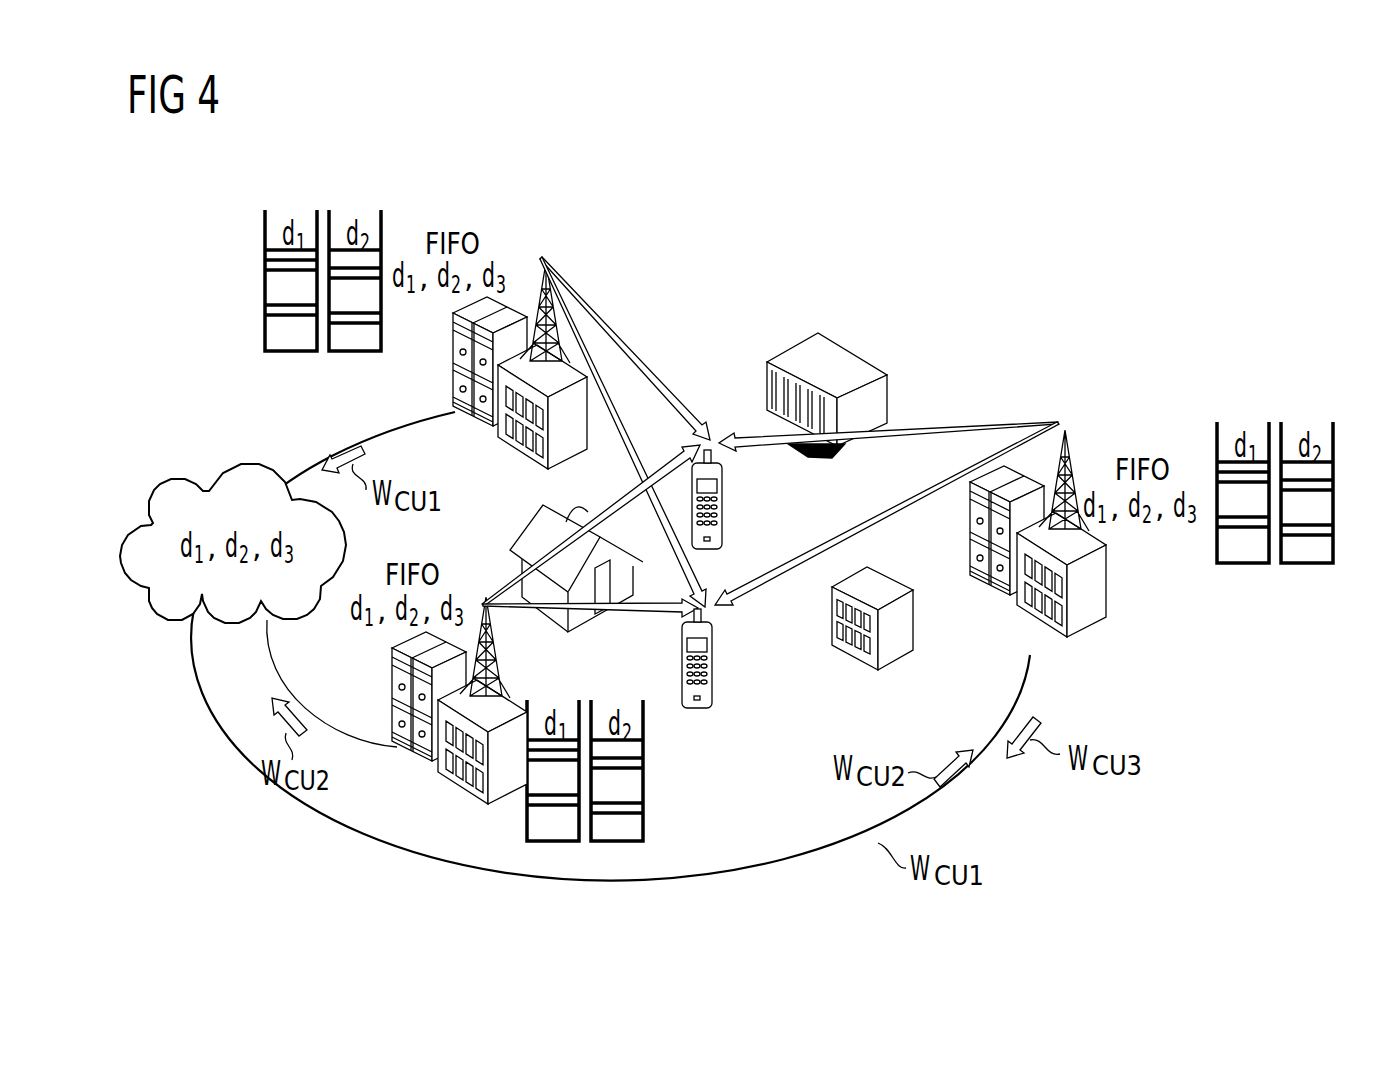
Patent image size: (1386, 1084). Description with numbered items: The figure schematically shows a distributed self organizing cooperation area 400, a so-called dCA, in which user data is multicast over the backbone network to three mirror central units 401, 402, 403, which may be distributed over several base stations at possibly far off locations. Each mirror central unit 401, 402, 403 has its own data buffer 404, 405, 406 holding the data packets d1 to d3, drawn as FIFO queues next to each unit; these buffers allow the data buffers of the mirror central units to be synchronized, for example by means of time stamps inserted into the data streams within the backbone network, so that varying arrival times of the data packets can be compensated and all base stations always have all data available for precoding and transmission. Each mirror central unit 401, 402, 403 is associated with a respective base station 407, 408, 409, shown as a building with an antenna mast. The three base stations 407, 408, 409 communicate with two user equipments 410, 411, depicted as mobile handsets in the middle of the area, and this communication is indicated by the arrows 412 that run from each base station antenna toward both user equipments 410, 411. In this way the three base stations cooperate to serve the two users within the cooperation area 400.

The distributed self organizing cooperation area 400 is at (680, 175).
The mirror central unit 401 is at (527, 324).
The mirror central unit 402 is at (455, 763).
The mirror central unit 403 is at (1092, 557).
The data buffer 404 is at (453, 378).
The data buffer 405 is at (390, 678).
The data buffer 406 is at (970, 523).
The base station 407 is at (528, 290).
The base station 408 is at (497, 653).
The base station 409 is at (1062, 457).
The user equipment 410 is at (723, 502).
The user equipment 411 is at (713, 688).
The arrows 412 is at (795, 255).